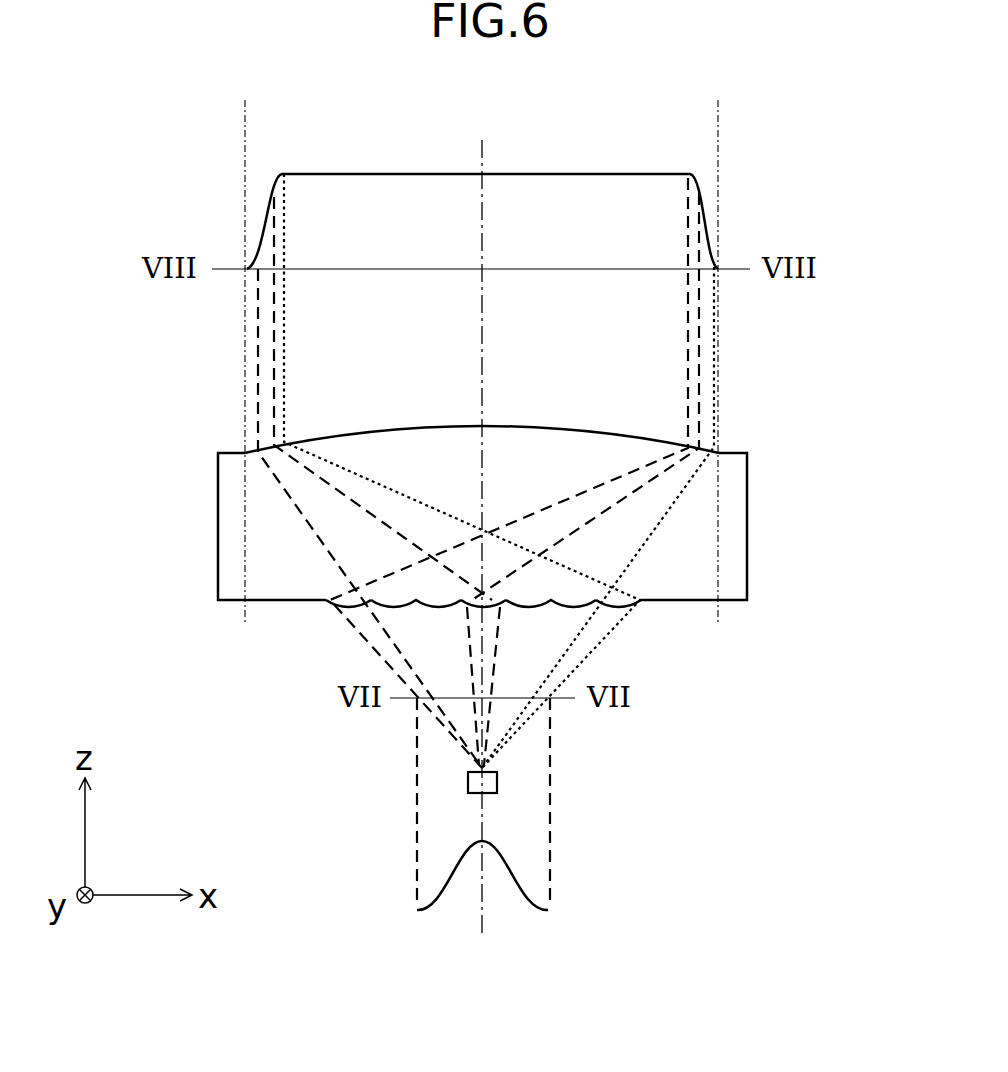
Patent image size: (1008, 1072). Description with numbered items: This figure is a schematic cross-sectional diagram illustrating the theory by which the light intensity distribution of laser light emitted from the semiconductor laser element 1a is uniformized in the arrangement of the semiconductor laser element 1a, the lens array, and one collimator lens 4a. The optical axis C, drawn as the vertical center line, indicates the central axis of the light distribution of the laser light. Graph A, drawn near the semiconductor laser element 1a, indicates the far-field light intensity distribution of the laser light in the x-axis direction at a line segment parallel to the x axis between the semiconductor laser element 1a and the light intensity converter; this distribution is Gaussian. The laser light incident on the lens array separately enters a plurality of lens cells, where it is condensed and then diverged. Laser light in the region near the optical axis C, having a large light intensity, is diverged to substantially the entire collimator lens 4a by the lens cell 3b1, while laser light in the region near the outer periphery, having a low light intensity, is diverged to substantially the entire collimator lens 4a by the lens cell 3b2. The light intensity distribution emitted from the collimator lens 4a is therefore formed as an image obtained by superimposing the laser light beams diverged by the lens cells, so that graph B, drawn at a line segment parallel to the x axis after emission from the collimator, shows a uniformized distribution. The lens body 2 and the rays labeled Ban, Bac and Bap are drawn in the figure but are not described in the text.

The semiconductor laser element 1a is at (497, 788).
The lens 2 is at (235, 535).
The lens cell 3b1 is at (465, 608).
The lens cell 3b2 is at (338, 607).
The collimator lens 4a is at (593, 427).
The graph A is at (452, 872).
The graph B is at (415, 173).
The optical axis C is at (482, 350).
The light ray Ban is at (300, 515).
The light ray Bac is at (595, 517).
The light ray Bap is at (637, 555).